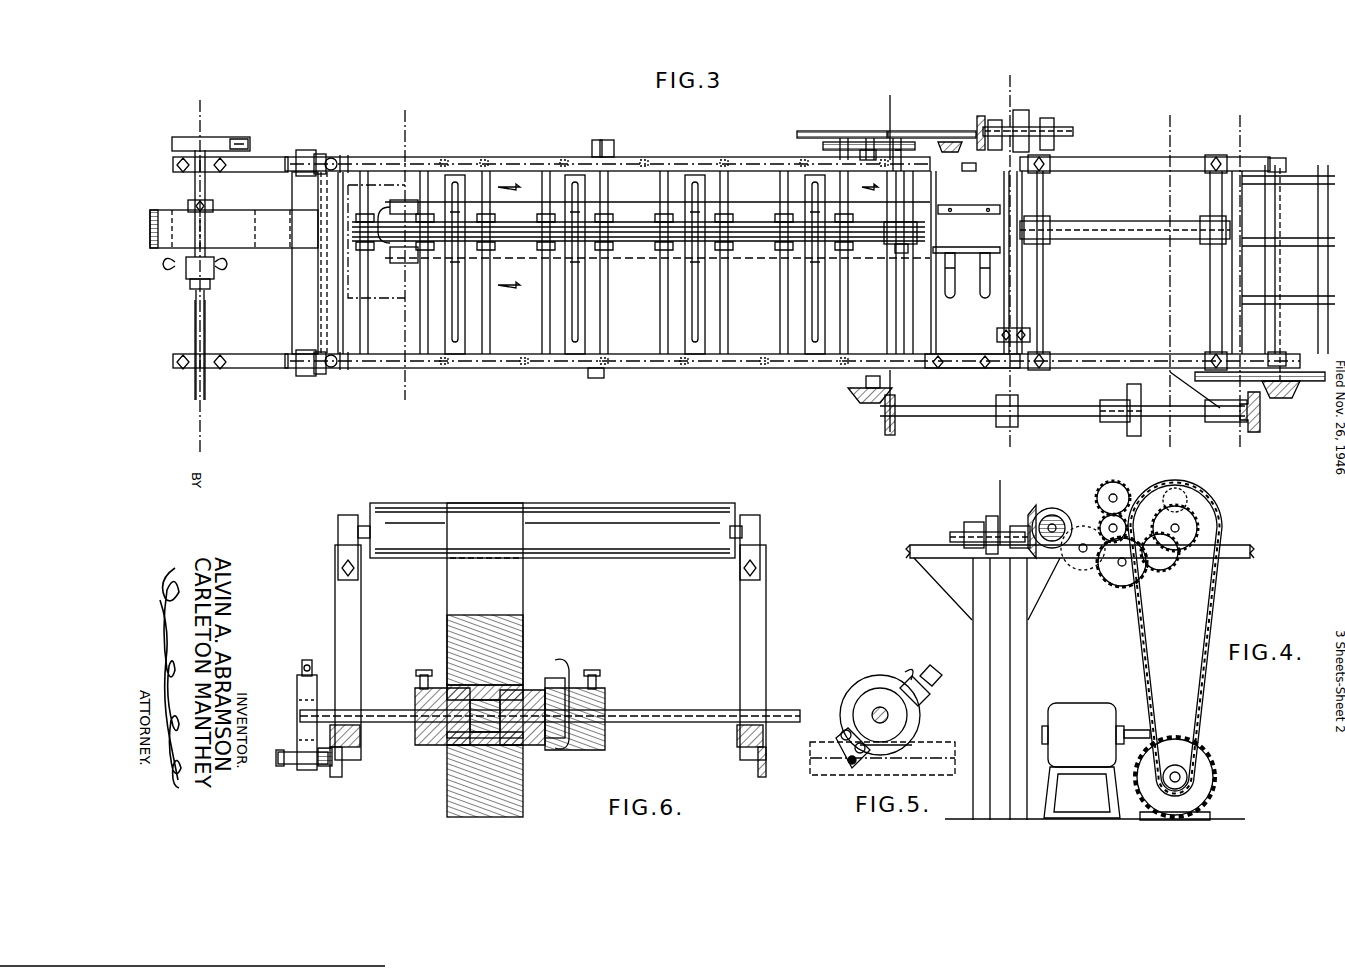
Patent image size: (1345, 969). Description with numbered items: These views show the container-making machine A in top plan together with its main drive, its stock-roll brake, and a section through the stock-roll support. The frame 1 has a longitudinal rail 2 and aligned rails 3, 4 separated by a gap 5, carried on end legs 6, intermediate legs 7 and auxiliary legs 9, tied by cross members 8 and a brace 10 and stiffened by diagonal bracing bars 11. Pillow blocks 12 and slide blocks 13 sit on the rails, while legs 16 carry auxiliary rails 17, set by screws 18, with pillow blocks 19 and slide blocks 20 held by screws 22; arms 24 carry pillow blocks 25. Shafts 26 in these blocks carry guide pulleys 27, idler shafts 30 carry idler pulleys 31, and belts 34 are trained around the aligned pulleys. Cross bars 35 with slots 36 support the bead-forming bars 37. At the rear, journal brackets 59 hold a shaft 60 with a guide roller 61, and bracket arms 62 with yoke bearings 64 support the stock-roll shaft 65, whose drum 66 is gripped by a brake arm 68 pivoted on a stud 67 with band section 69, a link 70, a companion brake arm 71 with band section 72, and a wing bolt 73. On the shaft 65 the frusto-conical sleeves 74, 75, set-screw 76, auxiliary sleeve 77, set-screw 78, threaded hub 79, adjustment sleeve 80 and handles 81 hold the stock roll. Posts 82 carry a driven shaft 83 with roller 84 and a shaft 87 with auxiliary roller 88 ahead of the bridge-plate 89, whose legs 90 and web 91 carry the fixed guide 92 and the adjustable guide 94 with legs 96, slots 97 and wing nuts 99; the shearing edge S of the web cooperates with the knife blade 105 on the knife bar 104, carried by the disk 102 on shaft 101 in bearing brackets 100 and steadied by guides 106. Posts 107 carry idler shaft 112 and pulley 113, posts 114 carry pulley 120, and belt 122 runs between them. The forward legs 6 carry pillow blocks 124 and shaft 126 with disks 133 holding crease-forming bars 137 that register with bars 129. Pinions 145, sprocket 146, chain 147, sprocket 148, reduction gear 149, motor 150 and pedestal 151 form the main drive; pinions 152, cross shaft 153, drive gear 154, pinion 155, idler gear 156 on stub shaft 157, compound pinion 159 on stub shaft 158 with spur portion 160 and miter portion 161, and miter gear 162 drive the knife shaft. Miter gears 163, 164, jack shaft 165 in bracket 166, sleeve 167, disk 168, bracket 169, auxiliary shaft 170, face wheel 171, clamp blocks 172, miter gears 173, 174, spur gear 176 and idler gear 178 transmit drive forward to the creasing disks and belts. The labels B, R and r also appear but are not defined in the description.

In FIG. 3, the frame 1 is at (764, 372).
In FIG. 3, the longitudinal rail 2 is at (1072, 370).
In FIG. 3, the rail 3 is at (522, 157).
In FIG. 4, the rail 3 is at (1252, 550).
In FIG. 3, the rail 4 is at (1116, 157).
In FIG. 4, the rail 4 is at (920, 546).
In FIG. 3, the gap 5 is at (1022, 176).
In FIG. 4, the gap 5 is at (976, 575).
In FIG. 3, the end legs 6 is at (160, 115).
In FIG. 6, the end legs 6 is at (335, 595).
In FIG. 3, the intermediate legs 7 is at (382, 117).
In FIG. 5, the intermediate legs 7 is at (972, 640).
In FIG. 4, the intermediate legs 7 is at (980, 640).
In FIG. 3, the cross members 8 is at (340, 310).
In FIG. 3, the auxiliary legs 9 is at (877, 188).
In FIG. 3, the cross member or brace 10 is at (860, 103).
In FIG. 3, the diagonal bracing bars 11 is at (986, 78).
In FIG. 4, the diagonal bracing bars 11 is at (940, 584).
In FIG. 3, the pillow blocks 12 is at (1136, 119).
In FIG. 3, the slide blocks 13 is at (1216, 119).
In FIG. 3, the legs 16 is at (344, 155).
In FIG. 4, the legs 16 is at (1028, 505).
In FIG. 3, the auxiliary rails 17 is at (642, 158).
In FIG. 3, the screws 18 is at (331, 158).
In FIG. 3, the pillow blocks 19 is at (452, 157).
In FIG. 3, the slide blocks 20 is at (360, 372).
In FIG. 3, the screws 22 is at (412, 370).
In FIG. 3, the arms 24 is at (594, 140).
In FIG. 3, the pillow blocks 25 is at (612, 140).
In FIG. 3, the shafts 26 is at (362, 336).
In FIG. 4, the shafts 26 is at (1176, 490).
In FIG. 3, the guide pulleys or sheaves 27 is at (618, 215).
In FIG. 3, the idler shafts 30 is at (605, 330).
In FIG. 3, the idler pulleys or sheaves 31 is at (618, 232).
In FIG. 3, the belts 34 is at (752, 255).
In FIG. 3, the cross bars 35 is at (446, 292).
In FIG. 3, the longitudinal slots 36 is at (445, 310).
In FIG. 3, the bead-forming bars 37 is at (398, 210).
In FIG. 3, the journal brackets 59 is at (292, 164).
In FIG. 6, the journal brackets 59 is at (346, 515).
In FIG. 3, the horizontal shaft 60 is at (314, 154).
In FIG. 6, the horizontal shaft 60 is at (362, 526).
In FIG. 3, the guide roller 61 is at (292, 316).
In FIG. 6, the guide roller 61 is at (662, 503).
In FIG. 3, the bracket arms 62 is at (262, 152).
In FIG. 6, the bracket arms 62 is at (338, 777).
In FIG. 5, the bracket arms 62 is at (920, 776).
In FIG. 3, the yoke bearings 64 is at (208, 118).
In FIG. 6, the yoke bearings 64 is at (360, 740).
In FIG. 3, the horizontal shaft 65 is at (196, 318).
In FIG. 6, the horizontal shaft 65 is at (668, 722).
In FIG. 5, the horizontal shaft 65 is at (890, 714).
In FIG. 6, the wheel or drum 66 is at (300, 697).
In FIG. 5, the wheel or drum 66 is at (872, 690).
In FIG. 6, the stud 67 is at (282, 765).
In FIG. 5, the stud 67 is at (852, 768).
In FIG. 5, the brake arm 68 is at (928, 678).
In FIG. 6, the band section 69 is at (322, 767).
In FIG. 5, the band section 69 is at (912, 745).
In FIG. 5, the link 70 is at (842, 752).
In FIG. 6, the companion brake arm 71 is at (297, 676).
In FIG. 5, the companion brake arm 71 is at (838, 736).
In FIG. 5, the brake band section 72 is at (858, 692).
In FIG. 6, the wing bolt 73 is at (307, 660).
In FIG. 5, the wing bolt 73 is at (906, 672).
In FIG. 3, the stock-roll bearing sleeve 74 is at (188, 204).
In FIG. 6, the stock-roll bearing sleeve 74 is at (434, 748).
In FIG. 3, the stock-roll bearing sleeve 75 is at (186, 261).
In FIG. 6, the stock-roll bearing sleeve 75 is at (530, 748).
In FIG. 6, the radial set-screw 76 is at (424, 670).
In FIG. 3, the auxiliary sleeve 77 is at (188, 284).
In FIG. 6, the auxiliary sleeve 77 is at (606, 690).
In FIG. 6, the radial set-screw 78 is at (594, 670).
In FIG. 6, the threaded hub 79 is at (588, 752).
In FIG. 3, the adjustment sleeve 80 is at (216, 278).
In FIG. 6, the adjustment sleeve 80 is at (548, 678).
In FIG. 6, the radial handles 81 is at (570, 662).
In FIG. 3, the posts 82 is at (918, 326).
In FIG. 4, the driven shaft 83 is at (1122, 512).
In FIG. 3, the roller 84 is at (910, 305).
In FIG. 3, the shaft 87 is at (903, 290).
In FIG. 4, the shaft 87 is at (1126, 484).
In FIG. 3, the auxiliary roller 88 is at (918, 232).
In FIG. 3, the bridge-plate 89 is at (970, 386).
In FIG. 3, the legs 90 is at (975, 376).
In FIG. 3, the web section 91 is at (1000, 300).
In FIG. 3, the fixed guide 92 is at (972, 206).
In FIG. 3, the adjustable guide 94 is at (985, 244).
In FIG. 3, the horizontal legs 96 is at (1008, 292).
In FIG. 3, the longitudinal slots 97 is at (1010, 268).
In FIG. 3, the wing nuts 99 is at (965, 282).
In FIG. 3, the bearing brackets 100 is at (1000, 128).
In FIG. 4, the bearing brackets 100 is at (968, 548).
In FIG. 3, the shaft 101 is at (1056, 134).
In FIG. 4, the shaft 101 is at (968, 522).
In FIG. 3, the hubbed disk 102 is at (1030, 120).
In FIG. 4, the hubbed disk 102 is at (990, 516).
In FIG. 3, the knife bar 104 is at (1018, 368).
In FIG. 4, the knife bar 104 is at (1000, 484).
In FIG. 3, the knife blade 105 is at (1008, 322).
In FIG. 3, the steadying guides 106 is at (1000, 336).
In FIG. 3, the posts 107 is at (1052, 162).
In FIG. 3, the idler shaft 112 is at (1045, 200).
In FIG. 3, the pulley 113 is at (1045, 222).
In FIG. 3, the posts 114 is at (1210, 157).
In FIG. 3, the pulley 120 is at (1198, 245).
In FIG. 3, the endless belt 122 is at (1130, 240).
In FIG. 3, the pillow blocks 124 is at (1286, 160).
In FIG. 3, the shaft 126 is at (1286, 166).
In FIG. 3, the horizontal bars 129 is at (1232, 300).
In FIG. 3, the disks 133 is at (1294, 186).
In FIG. 3, the horizontal bars 137 is at (1282, 272).
In FIG. 3, the pinions 145 is at (823, 147).
In FIG. 4, the pinions 145 is at (1178, 520).
In FIG. 3, the driving sprocket 146 is at (852, 132).
In FIG. 4, the driving sprocket 146 is at (1218, 574).
In FIG. 4, the sprocket chain 147 is at (1212, 614).
In FIG. 4, the driving sprocket 148 is at (1192, 764).
In FIG. 4, the reduction gear assembly 149 is at (1218, 780).
In FIG. 4, the electric motor 150 is at (1084, 704).
In FIG. 4, the floor pedestal 151 is at (1058, 792).
In FIG. 3, the pinions 152 is at (926, 131).
In FIG. 4, the pinions 152 is at (1106, 460).
In FIG. 3, the cross shaft 153 is at (870, 300).
In FIG. 4, the cross shaft 153 is at (1158, 572).
In FIG. 3, the drive gear 154 is at (876, 140).
In FIG. 4, the drive gear 154 is at (1122, 588).
In FIG. 3, the small pinion 155 is at (905, 130).
In FIG. 4, the small pinion 155 is at (1100, 520).
In FIG. 4, the idler gear 156 is at (1106, 572).
In FIG. 4, the stub shaft 157 is at (1080, 556).
In FIG. 3, the stub shaft 158 is at (965, 148).
In FIG. 4, the stub shaft 158 is at (1006, 580).
In FIG. 3, the compound pinion 159 is at (952, 168).
In FIG. 4, the compound pinion 159 is at (1054, 508).
In FIG. 3, the spur gear portion 160 is at (979, 118).
In FIG. 4, the spur gear portion 160 is at (1032, 505).
In FIG. 3, the miter gear portion 161 is at (950, 142).
In FIG. 3, the miter gear 162 is at (995, 120).
In FIG. 4, the miter gear 162 is at (1044, 512).
In FIG. 3, the miter gear 163 is at (864, 404).
In FIG. 3, the miter gear 164 is at (888, 436).
In FIG. 3, the jack shaft 165 is at (1010, 410).
In FIG. 3, the bracket 166 is at (918, 380).
In FIG. 3, the tubular sleeve 167 is at (1108, 400).
In FIG. 3, the disk 168 is at (1126, 424).
In FIG. 3, the auxiliary journal bracket 169 is at (1196, 392).
In FIG. 3, the auxiliary shaft 170 is at (1208, 424).
In FIG. 3, the face wheel 171 is at (1145, 424).
In FIG. 3, the clamp blocks 172 is at (1124, 400).
In FIG. 3, the miter gear 173 is at (1260, 430).
In FIG. 3, the miter gear 174 is at (1290, 400).
In FIG. 3, the spur gear 176 is at (1306, 382).
In FIG. 3, the idler gear 178 is at (1228, 381).
In FIG. 3, the container-making machine A is at (758, 135).
In FIG. 3, the shaft B is at (1120, 208).
In FIG. 3, the roll R is at (160, 210).
In FIG. 6, the roll R is at (522, 630).
In FIG. 3, the shearing edge S is at (1012, 190).
In FIG. 3, the roll core r is at (282, 250).
In FIG. 6, the roll core r is at (522, 502).